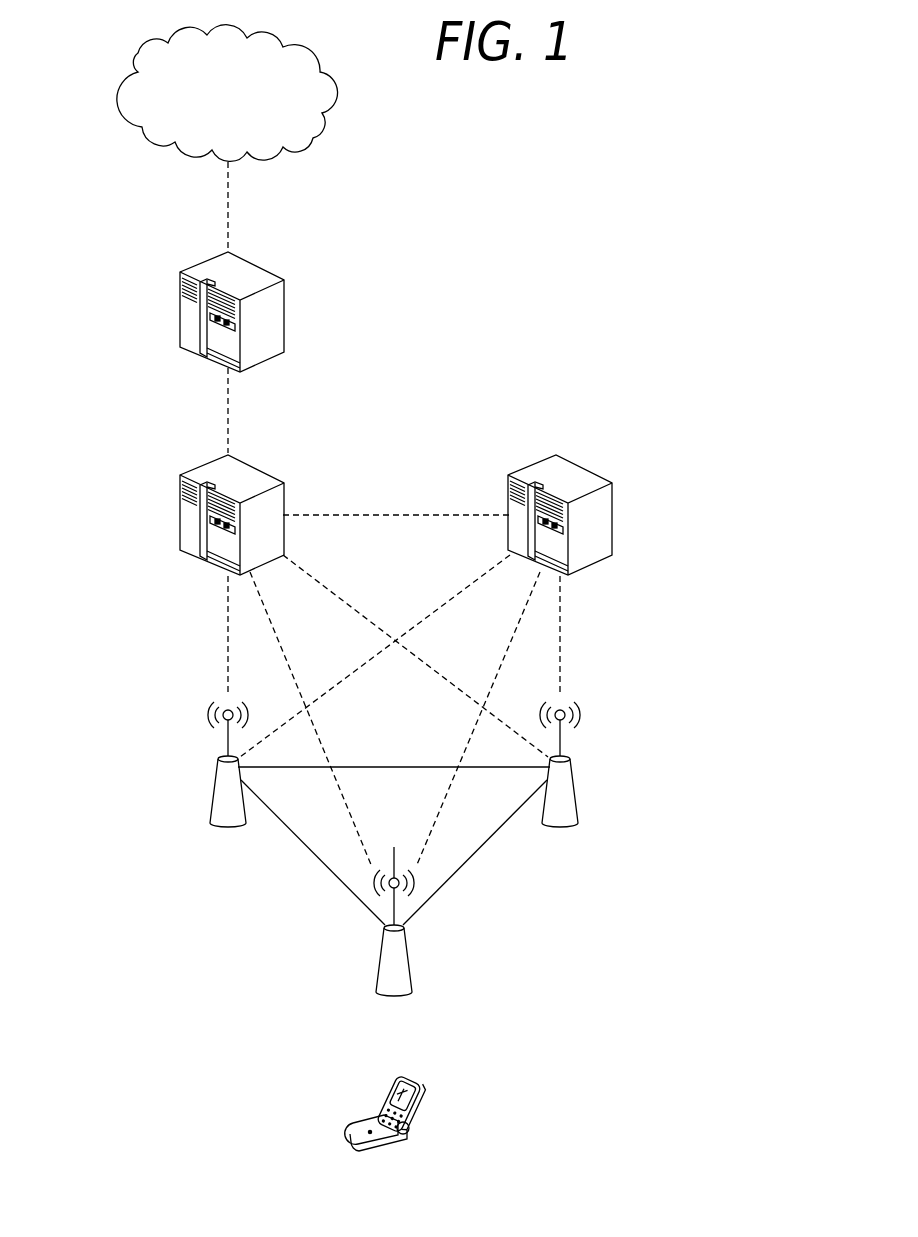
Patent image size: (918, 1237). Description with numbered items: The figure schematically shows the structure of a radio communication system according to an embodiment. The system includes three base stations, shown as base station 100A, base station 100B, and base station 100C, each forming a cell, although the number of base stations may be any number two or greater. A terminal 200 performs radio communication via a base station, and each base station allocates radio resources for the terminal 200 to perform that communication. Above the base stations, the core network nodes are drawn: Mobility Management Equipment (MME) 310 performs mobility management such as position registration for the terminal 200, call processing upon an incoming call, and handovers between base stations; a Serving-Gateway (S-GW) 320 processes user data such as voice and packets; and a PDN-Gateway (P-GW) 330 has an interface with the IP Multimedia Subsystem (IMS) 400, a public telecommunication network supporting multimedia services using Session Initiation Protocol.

The IP Multimedia Subsystem (IMS) 400 is at (140, 53).
The PDN-Gateway (P-GW) 330 is at (284, 293).
The Serving-Gateway (S-GW) 320 is at (178, 515).
The Mobility Management Equipment (MME) 310 is at (613, 519).
The base station 100A is at (212, 786).
The base station 100B is at (410, 958).
The base station 100C is at (575, 787).
The terminal 200 is at (381, 1098).